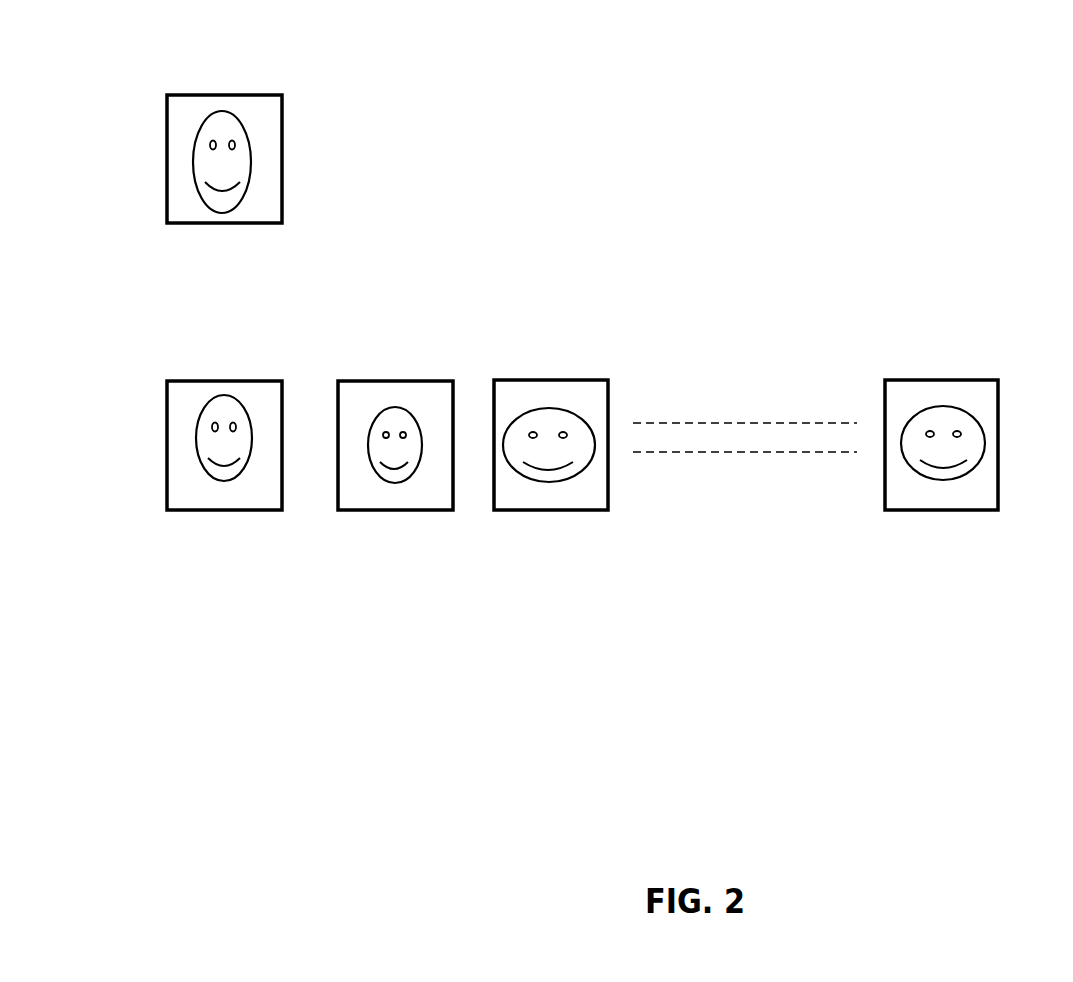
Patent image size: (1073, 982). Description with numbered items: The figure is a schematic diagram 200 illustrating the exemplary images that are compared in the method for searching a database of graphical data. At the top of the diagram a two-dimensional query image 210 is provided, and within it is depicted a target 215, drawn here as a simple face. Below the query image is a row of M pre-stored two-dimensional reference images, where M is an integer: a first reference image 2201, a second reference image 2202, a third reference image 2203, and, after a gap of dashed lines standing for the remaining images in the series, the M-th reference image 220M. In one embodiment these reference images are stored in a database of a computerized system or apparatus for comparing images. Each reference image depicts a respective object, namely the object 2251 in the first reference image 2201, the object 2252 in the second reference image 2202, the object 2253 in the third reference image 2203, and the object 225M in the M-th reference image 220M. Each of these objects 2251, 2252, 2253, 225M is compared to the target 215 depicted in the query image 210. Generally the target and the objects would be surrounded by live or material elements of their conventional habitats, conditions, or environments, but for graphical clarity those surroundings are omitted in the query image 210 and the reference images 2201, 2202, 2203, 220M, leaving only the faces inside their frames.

The schematic diagram 200 is at (963, 36).
The query image 210 is at (207, 95).
The target 215 is at (252, 167).
The reference image 2201 is at (197, 381).
The reference image 2202 is at (373, 381).
The reference image 2203 is at (530, 380).
The reference image 220M is at (923, 380).
The object 2251 is at (217, 482).
The object 2252 is at (395, 483).
The object 2253 is at (549, 482).
The object 225M is at (943, 480).